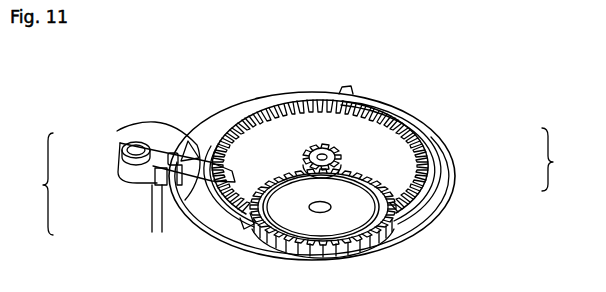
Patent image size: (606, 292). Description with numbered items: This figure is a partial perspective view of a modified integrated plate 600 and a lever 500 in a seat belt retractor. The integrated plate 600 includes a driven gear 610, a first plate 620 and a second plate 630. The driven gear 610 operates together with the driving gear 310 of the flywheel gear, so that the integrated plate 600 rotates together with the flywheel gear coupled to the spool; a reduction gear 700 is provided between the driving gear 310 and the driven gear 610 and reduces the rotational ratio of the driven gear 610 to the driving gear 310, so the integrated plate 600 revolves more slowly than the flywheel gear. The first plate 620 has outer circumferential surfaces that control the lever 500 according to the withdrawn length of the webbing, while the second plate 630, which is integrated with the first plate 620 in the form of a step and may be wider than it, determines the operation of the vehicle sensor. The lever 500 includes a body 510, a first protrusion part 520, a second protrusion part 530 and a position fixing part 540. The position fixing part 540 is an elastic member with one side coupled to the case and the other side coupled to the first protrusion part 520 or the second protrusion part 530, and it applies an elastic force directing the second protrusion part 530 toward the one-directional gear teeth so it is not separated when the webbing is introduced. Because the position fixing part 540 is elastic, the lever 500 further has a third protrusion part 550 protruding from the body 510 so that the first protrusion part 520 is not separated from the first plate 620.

The driving gear 310 is at (321, 144).
The reduction gear 700 is at (352, 195).
The lever 500 is at (126, 183).
The body 510 is at (127, 181).
The first protrusion part 520 is at (152, 198).
The second protrusion part 530 is at (150, 222).
The position fixing part 540 is at (118, 158).
The third protrusion part 550 is at (117, 131).
The integrated plate 600 is at (374, 173).
The driven gear 610 is at (430, 130).
The first plate 620 is at (437, 173).
The second plate 630 is at (448, 191).